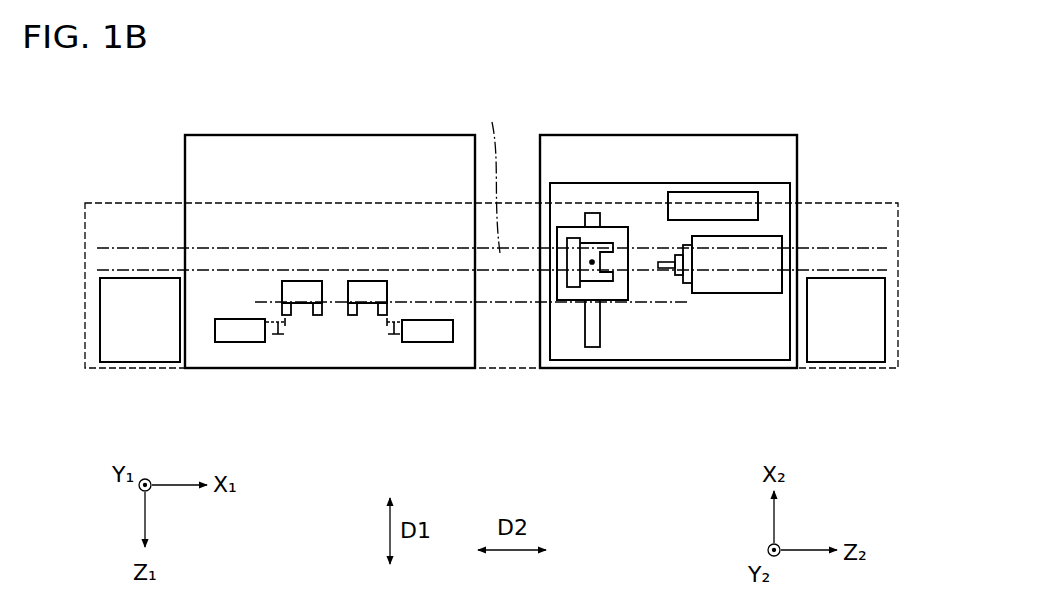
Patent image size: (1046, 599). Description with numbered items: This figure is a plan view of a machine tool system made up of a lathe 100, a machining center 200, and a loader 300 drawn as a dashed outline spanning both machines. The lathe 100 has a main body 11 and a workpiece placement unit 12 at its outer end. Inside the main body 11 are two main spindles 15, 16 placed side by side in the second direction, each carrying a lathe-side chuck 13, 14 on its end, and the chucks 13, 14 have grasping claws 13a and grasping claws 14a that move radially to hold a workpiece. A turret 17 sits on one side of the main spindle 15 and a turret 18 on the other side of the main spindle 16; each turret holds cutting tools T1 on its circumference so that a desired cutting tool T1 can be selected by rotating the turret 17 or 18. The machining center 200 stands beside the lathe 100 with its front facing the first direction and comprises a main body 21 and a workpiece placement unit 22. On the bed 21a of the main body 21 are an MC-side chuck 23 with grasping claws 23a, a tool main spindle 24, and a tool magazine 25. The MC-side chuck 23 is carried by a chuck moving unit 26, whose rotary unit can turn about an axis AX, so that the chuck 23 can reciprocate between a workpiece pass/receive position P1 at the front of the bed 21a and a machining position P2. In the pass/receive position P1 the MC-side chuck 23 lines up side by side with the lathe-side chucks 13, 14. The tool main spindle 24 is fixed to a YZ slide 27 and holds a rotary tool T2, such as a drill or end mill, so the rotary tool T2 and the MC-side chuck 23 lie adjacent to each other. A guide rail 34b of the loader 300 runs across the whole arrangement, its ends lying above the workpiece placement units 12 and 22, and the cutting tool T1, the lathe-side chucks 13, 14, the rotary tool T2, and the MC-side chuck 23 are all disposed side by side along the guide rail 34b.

The loader 300 is at (122, 202).
The lathe 100 is at (287, 254).
The main body 11 is at (415, 146).
The workpiece placement unit 12 is at (134, 346).
The lathe-side chuck 13 is at (317, 358).
The grasping claws 13a is at (300, 295).
The lathe-side chuck 14 is at (383, 358).
The grasping claws 14a is at (365, 295).
The main spindle 15 is at (300, 279).
The main spindle 16 is at (370, 279).
The turret 17 is at (240, 333).
The turret 18 is at (440, 333).
The cutting tool T1 is at (280, 332).
The guide rail 34b is at (488, 174).
The machining center 200 is at (696, 248).
The main body 21 is at (788, 147).
The bed 21a is at (720, 345).
The workpiece placement unit 22 is at (858, 350).
The MC-side chuck 23 is at (598, 286).
The grasping claws 23a is at (613, 282).
The tool main spindle 24 is at (687, 243).
The tool magazine 25 is at (742, 202).
The chuck moving unit 26 is at (633, 304).
The YZ slide 27 is at (760, 290).
The axis AX is at (592, 261).
The workpiece pass/receive position P1 is at (575, 319).
The machining position P2 is at (567, 231).
The rotary tool T2 is at (667, 271).